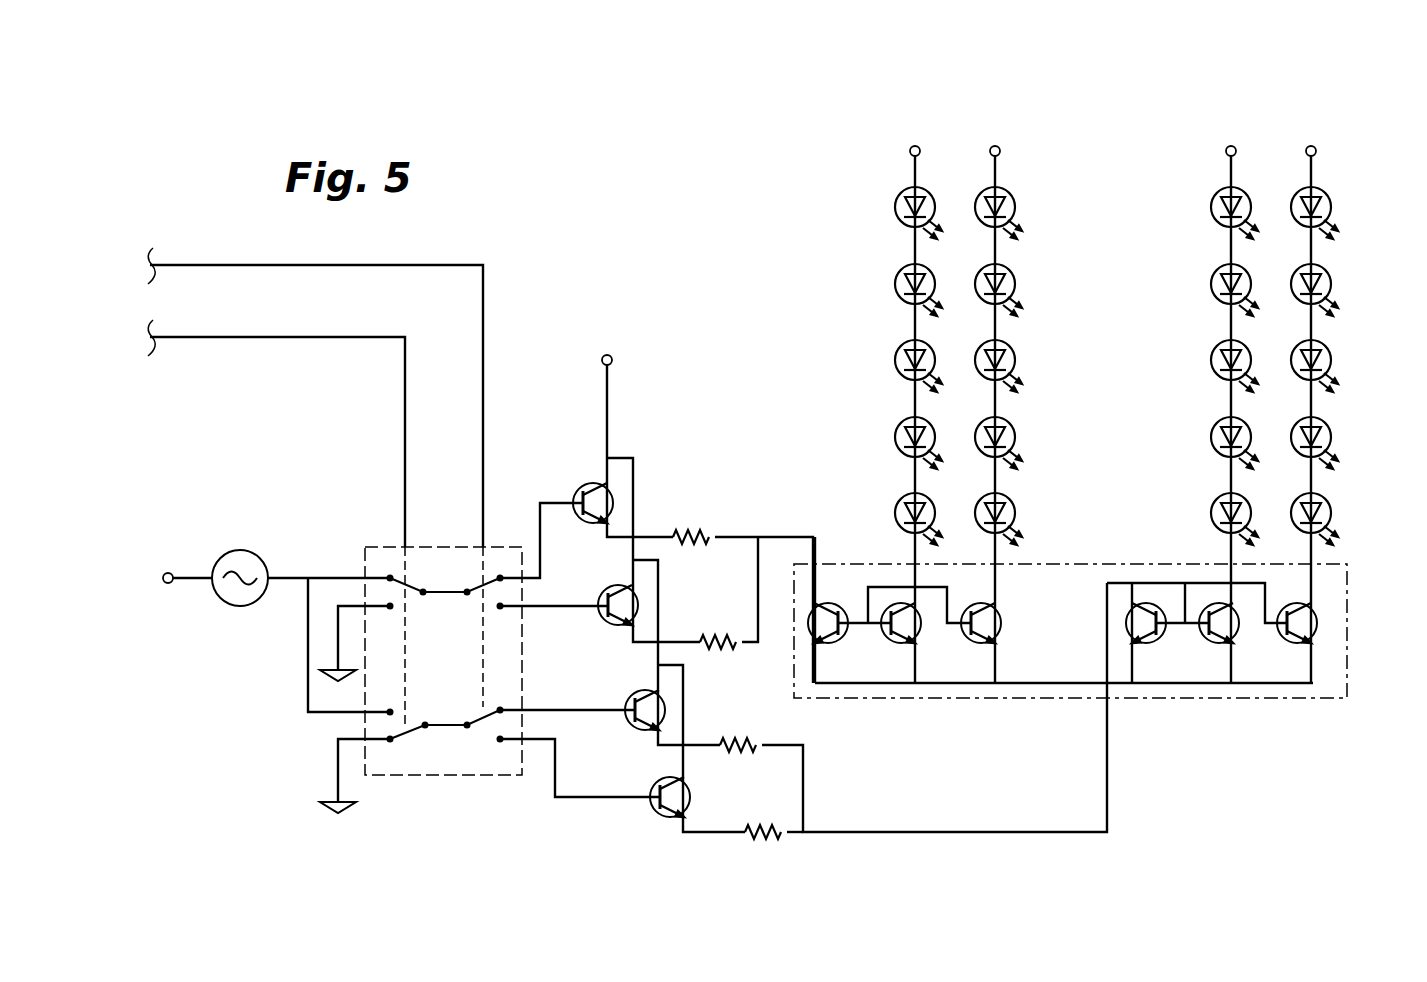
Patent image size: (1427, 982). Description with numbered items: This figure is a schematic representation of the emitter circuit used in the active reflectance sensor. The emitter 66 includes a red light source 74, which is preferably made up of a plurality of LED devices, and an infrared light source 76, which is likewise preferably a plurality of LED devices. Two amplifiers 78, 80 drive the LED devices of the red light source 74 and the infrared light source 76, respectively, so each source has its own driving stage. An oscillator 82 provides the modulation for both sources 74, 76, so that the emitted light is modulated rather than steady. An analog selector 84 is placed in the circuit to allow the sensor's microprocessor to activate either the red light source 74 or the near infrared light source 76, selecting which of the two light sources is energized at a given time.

The emitter 66 is at (1109, 383).
The red light source 74 is at (898, 196).
The infrared light source 76 is at (1329, 194).
The amplifier 78 is at (652, 505).
The amplifier 80 is at (685, 780).
The oscillator 82 is at (242, 550).
The analog selector 84 is at (440, 777).